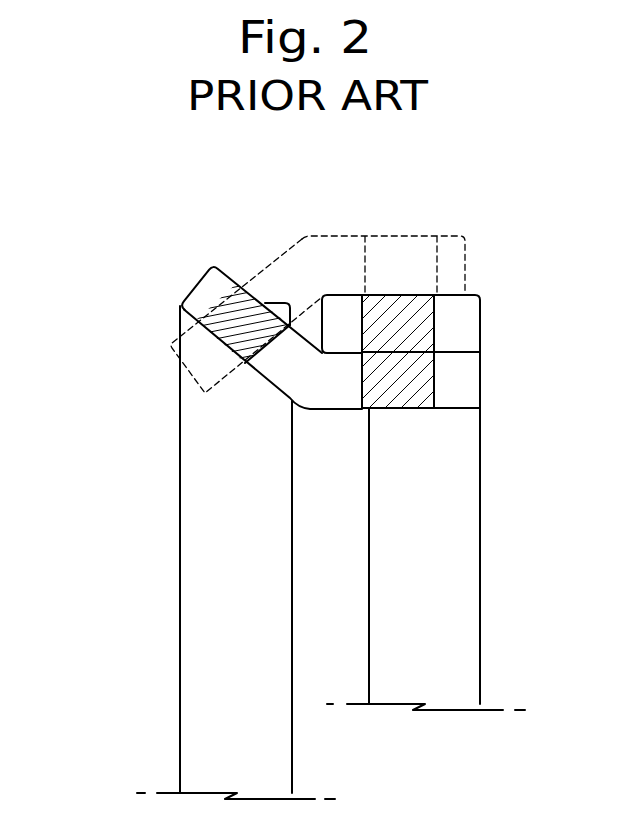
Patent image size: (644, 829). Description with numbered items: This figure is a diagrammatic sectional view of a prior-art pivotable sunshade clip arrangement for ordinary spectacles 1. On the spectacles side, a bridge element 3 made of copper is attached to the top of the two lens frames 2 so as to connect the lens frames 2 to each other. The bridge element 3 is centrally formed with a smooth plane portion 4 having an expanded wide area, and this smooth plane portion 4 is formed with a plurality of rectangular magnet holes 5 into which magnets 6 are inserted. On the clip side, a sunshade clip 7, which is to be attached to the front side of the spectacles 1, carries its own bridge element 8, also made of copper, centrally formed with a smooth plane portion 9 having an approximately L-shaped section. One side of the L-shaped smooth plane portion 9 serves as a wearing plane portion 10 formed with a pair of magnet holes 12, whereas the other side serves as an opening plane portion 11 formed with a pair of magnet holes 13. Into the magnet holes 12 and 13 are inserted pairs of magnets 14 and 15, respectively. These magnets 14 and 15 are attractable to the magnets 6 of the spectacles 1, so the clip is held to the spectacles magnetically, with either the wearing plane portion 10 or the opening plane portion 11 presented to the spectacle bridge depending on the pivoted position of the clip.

The spectacles 1 is at (530, 670).
The lens frames 2 is at (470, 585).
The bridge element 3 is at (470, 323).
The smooth plane portion 4 is at (408, 293).
The magnet holes 5 is at (372, 327).
The magnets 6 is at (436, 296).
The sunshade clip 7 is at (155, 643).
The bridge element 8 is at (325, 412).
The smooth plane portion 9 is at (455, 352).
The wearing plane portion 10 is at (350, 350).
The opening plane portion 11 is at (231, 278).
The magnet holes 12 is at (428, 410).
The magnet holes 13 is at (242, 365).
The magnets 14 is at (388, 402).
The magnets 15 is at (232, 338).